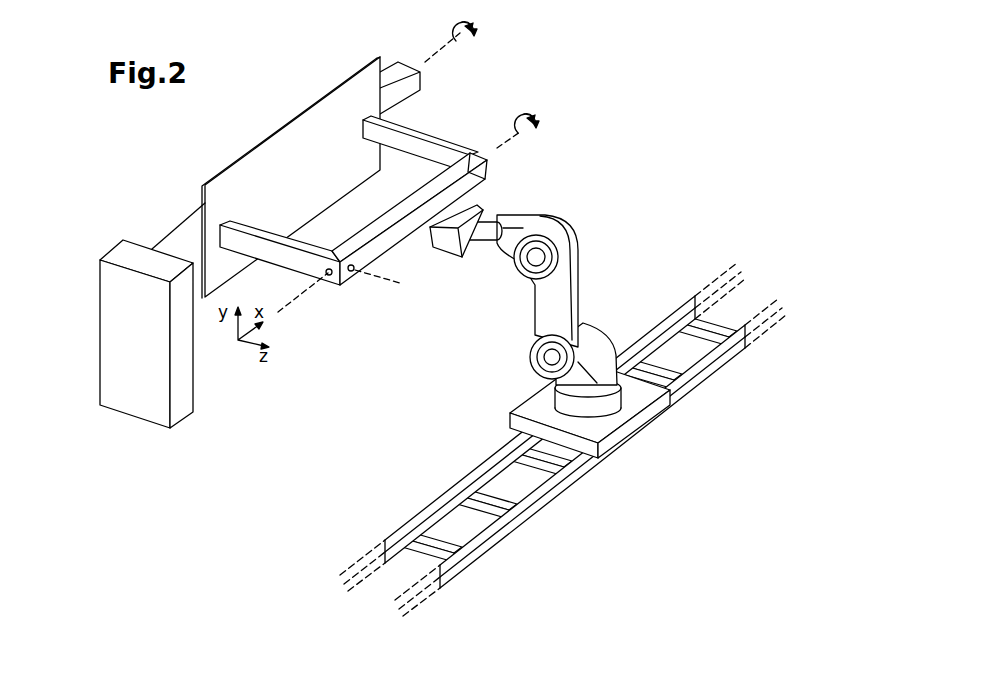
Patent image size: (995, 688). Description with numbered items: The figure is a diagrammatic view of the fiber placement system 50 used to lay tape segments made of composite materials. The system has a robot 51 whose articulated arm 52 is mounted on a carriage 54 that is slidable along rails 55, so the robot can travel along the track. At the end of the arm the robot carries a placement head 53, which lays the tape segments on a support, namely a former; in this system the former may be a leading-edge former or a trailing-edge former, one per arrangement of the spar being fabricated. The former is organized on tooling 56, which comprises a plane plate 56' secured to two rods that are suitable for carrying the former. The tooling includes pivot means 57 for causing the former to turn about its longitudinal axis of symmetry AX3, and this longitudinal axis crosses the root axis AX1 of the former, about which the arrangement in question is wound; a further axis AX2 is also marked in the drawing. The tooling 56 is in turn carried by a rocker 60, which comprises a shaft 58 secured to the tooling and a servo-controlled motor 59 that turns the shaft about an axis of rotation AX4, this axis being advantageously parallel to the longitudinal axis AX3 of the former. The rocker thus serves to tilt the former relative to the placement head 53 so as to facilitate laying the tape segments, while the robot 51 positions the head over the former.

The robot system / processing station 50 is at (219, 497).
The robot 51 is at (560, 292).
The articulated arm 52 is at (582, 224).
The placement head 53 is at (442, 250).
The carriage 54 is at (637, 404).
The rails 55 is at (735, 349).
The tooling 56 is at (420, 128).
The plane plate 56' is at (291, 177).
The pivot means 57 is at (330, 273).
The shaft 58 is at (175, 228).
The servo-controlled motor 59 is at (97, 273).
The rocker 60 is at (96, 323).
The root axis AX1 is at (388, 283).
The second axis AX2 is at (637, 401).
The longitudinal axis of symmetry AX3 is at (297, 300).
The axis of rotation AX4 is at (447, 46).